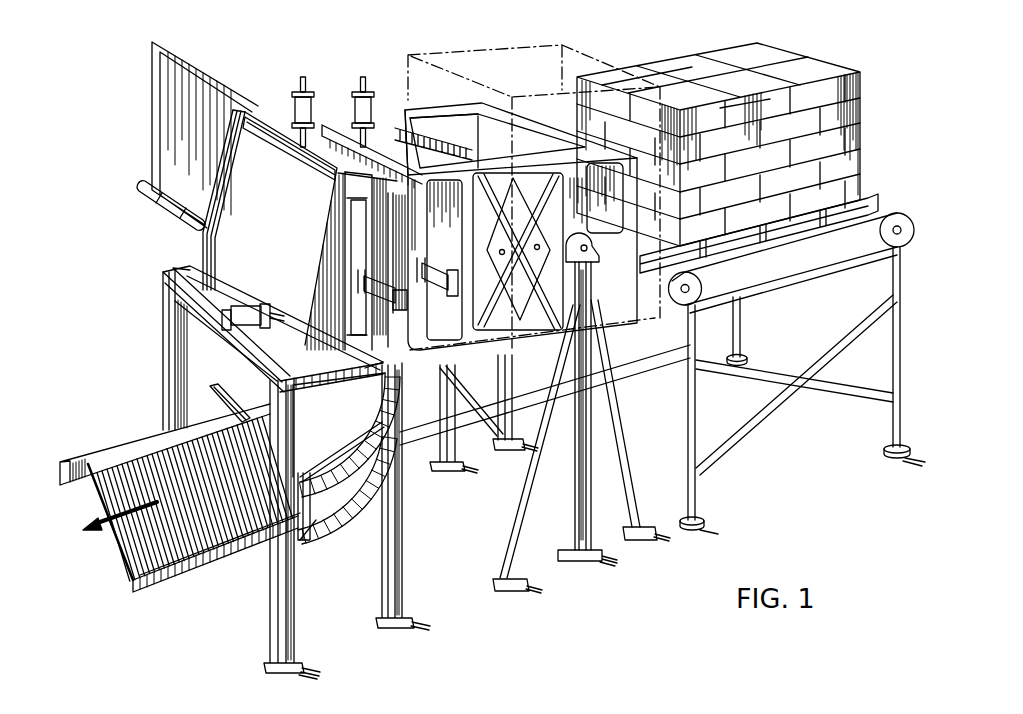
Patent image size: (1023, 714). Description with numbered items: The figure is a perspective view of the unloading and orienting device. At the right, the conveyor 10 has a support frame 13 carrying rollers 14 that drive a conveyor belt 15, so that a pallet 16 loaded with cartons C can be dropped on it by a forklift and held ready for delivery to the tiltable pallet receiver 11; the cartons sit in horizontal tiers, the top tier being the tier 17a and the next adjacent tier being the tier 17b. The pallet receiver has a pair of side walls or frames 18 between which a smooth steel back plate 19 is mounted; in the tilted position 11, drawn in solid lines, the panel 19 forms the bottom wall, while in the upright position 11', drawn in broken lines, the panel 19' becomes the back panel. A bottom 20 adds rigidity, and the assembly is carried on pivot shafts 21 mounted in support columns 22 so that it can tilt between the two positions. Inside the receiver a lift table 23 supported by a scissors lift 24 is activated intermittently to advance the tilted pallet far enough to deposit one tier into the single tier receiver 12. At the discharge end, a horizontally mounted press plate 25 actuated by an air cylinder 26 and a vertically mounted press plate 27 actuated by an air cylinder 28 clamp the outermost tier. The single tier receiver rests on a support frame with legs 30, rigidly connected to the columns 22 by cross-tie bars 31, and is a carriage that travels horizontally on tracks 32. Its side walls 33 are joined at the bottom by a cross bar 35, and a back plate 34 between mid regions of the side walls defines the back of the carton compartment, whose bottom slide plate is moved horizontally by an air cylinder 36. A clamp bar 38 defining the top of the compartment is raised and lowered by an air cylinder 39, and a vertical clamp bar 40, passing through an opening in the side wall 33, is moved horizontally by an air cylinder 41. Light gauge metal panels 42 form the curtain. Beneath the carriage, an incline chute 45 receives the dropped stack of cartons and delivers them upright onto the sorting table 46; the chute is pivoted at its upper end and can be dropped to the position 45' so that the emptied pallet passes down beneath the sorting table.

The conveyor 10 is at (930, 231).
The tiltable pallet receiver 11 is at (521, 178).
The upright position of tiltable pallet receiver 11' is at (534, 178).
The single tier receiver 12 is at (253, 98).
The support frame 13 is at (903, 328).
The rollers 14 is at (703, 305).
The conveyor belt 15 is at (786, 276).
The pallet 16 is at (862, 203).
The top tier 17a is at (862, 80).
The next adjacent tier 17b is at (862, 117).
The side walls or frames 18 is at (528, 338).
The smooth steel back plate 19 is at (518, 250).
The back panel 19' is at (433, 121).
The bottom 20 is at (616, 318).
The pivot shafts 21 is at (596, 245).
The support columns 22 is at (580, 456).
The lift table 23 is at (393, 112).
The scissors lift 24 is at (521, 195).
The horizontally mounted press plate 25 is at (340, 120).
The air cylinder 26 is at (362, 90).
The vertically mounted press plate 27 is at (452, 168).
The air cylinder 28 is at (444, 298).
The legs 30 is at (392, 540).
The cross-tie bars 31 is at (452, 462).
The tracks 32 is at (185, 259).
The side walls 33 is at (148, 238).
The back plate 34 is at (292, 241).
The cross bar 35 is at (297, 388).
The air cylinder 36 is at (258, 335).
The clamp bar 38 is at (322, 158).
The air cylinder 39 is at (300, 90).
The vertical clamp bar 40 is at (358, 250).
The air cylinder 41 is at (365, 368).
The light gauge metal panels 42 is at (187, 84).
The incline chute 45 is at (349, 458).
The dropped position of chute 45' is at (343, 551).
The sorting table 46 is at (221, 560).
The cartons C is at (872, 96).